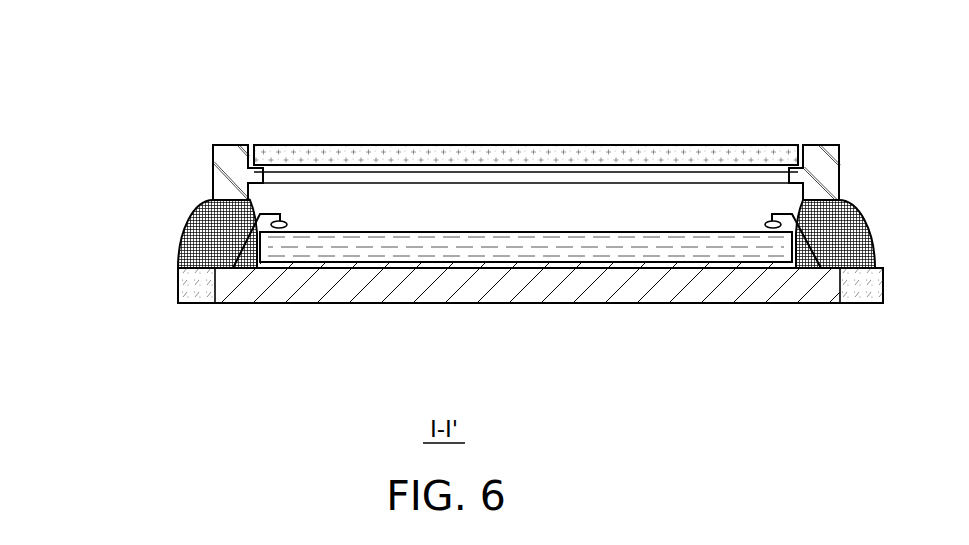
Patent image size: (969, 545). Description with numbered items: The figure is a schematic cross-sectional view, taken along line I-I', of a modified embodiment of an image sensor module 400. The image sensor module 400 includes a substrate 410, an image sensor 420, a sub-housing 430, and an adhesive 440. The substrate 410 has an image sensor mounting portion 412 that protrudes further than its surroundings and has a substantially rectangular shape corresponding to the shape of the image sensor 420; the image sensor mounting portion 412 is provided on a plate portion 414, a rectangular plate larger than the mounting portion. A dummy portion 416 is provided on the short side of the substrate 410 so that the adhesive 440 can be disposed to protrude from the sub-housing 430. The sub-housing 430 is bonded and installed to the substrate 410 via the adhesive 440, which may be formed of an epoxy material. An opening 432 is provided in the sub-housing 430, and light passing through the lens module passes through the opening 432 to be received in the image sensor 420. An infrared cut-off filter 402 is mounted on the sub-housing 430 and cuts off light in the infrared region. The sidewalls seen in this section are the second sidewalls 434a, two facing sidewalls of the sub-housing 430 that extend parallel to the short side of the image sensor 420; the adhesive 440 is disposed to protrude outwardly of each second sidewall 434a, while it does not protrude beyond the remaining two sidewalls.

The image sensor module 400 is at (390, 47).
The infrared cut-off filter 402 is at (443, 151).
The substrate 410 is at (530, 337).
The image sensor mounting portion 412 is at (250, 362).
The plate portion 414 is at (362, 292).
The dummy portion 416 is at (195, 288).
The image sensor 420 is at (528, 252).
The sub-housing 430 is at (235, 134).
The opening 432 is at (532, 179).
The second sidewall 434a is at (230, 192).
The adhesive 440 is at (192, 248).